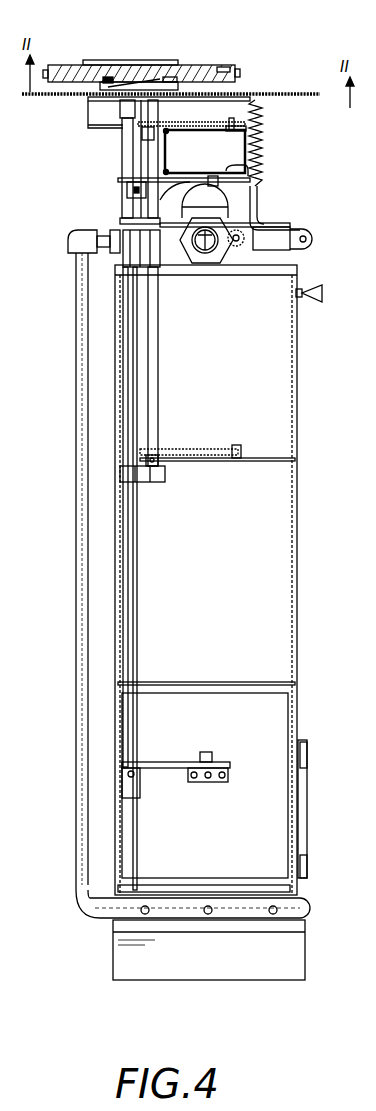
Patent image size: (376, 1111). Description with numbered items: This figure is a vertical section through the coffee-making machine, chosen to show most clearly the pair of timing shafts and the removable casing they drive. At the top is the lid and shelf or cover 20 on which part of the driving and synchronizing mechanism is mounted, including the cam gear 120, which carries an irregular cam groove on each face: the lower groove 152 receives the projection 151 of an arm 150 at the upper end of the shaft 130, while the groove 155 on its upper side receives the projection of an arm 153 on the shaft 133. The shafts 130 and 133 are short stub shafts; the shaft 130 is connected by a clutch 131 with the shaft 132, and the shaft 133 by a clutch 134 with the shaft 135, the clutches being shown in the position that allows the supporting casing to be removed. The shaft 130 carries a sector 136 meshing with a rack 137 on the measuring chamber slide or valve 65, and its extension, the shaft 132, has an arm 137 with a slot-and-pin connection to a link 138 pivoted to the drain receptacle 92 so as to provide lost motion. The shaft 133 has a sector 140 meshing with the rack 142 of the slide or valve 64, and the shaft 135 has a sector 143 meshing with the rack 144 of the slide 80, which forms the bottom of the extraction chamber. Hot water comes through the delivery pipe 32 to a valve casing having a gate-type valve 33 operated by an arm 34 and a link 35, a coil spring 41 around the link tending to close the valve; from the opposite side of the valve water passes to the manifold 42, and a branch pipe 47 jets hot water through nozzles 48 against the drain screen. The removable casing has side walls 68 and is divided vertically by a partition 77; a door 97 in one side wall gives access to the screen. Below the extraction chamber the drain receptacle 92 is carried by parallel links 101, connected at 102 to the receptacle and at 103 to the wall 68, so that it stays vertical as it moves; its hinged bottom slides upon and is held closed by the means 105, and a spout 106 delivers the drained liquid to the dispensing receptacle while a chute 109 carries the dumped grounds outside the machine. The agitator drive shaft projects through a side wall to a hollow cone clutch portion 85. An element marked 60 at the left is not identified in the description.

The lid and shelf 20 is at (300, 93).
The delivery pipe 32 is at (218, 252).
The valve 33 is at (206, 245).
The arm 34 is at (238, 246).
The link 35 is at (255, 212).
The coil spring 41 is at (246, 128).
The manifold 42 is at (290, 249).
The pipe 47 is at (76, 555).
The nozzles 48 is at (208, 918).
The bracket 60 is at (78, 142).
The slide or valve 64 is at (266, 134).
The measuring chamber slide or valve 65 is at (246, 170).
The side walls 68 is at (118, 607).
The partition 77 is at (276, 610).
The slide 80 is at (255, 461).
The hollow cone portion 85 is at (322, 292).
The drain receptacle 92 is at (220, 693).
The door 97 is at (303, 812).
The parallel links 101 is at (124, 826).
The link connection 102 is at (307, 768).
The link connection 103 is at (125, 870).
The bottom supporting means 105 is at (308, 908).
The spout 106 is at (222, 970).
The chute 109 is at (298, 868).
The cam gear 120 is at (58, 65).
The shaft 130 is at (122, 153).
The clutch 131 is at (118, 245).
The shaft 132 is at (128, 383).
The shaft 133 is at (158, 155).
The clutch 134 is at (163, 235).
The shaft 135 is at (158, 384).
The sector 136 is at (138, 205).
The rack 137 is at (218, 182).
The link 138 is at (214, 763).
The sector 140 is at (222, 124).
The rack 142 is at (236, 122).
The sector 143 is at (190, 449).
The rack 144 is at (240, 446).
The arm 150 is at (124, 82).
The projection 151 is at (108, 77).
The lower groove 152 is at (126, 83).
The arm 153 is at (152, 62).
The groove 155 is at (222, 67).